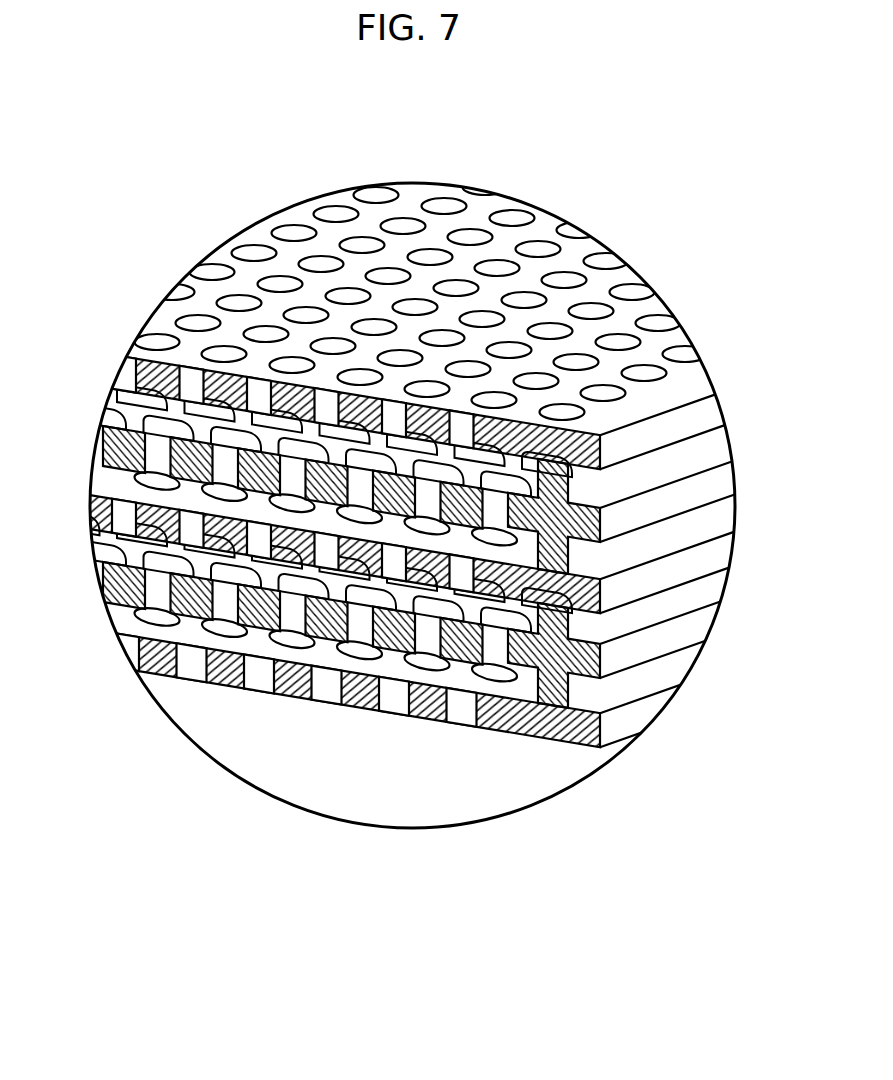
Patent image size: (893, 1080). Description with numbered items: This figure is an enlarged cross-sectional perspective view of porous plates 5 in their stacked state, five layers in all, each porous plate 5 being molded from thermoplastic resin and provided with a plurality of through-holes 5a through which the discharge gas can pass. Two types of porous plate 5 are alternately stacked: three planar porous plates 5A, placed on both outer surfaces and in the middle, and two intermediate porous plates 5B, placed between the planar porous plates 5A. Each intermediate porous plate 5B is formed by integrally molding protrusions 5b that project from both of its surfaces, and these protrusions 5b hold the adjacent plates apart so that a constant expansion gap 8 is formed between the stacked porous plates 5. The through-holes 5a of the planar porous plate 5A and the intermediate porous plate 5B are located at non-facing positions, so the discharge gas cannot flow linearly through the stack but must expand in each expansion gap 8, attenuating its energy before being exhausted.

The porous plate 5 is at (387, 555).
The planar porous plate 5A is at (387, 541).
The intermediate porous plate 5B is at (439, 569).
The through-hole 5a is at (421, 425).
The protrusion 5b is at (641, 579).
The expansion gap 8 is at (311, 506).